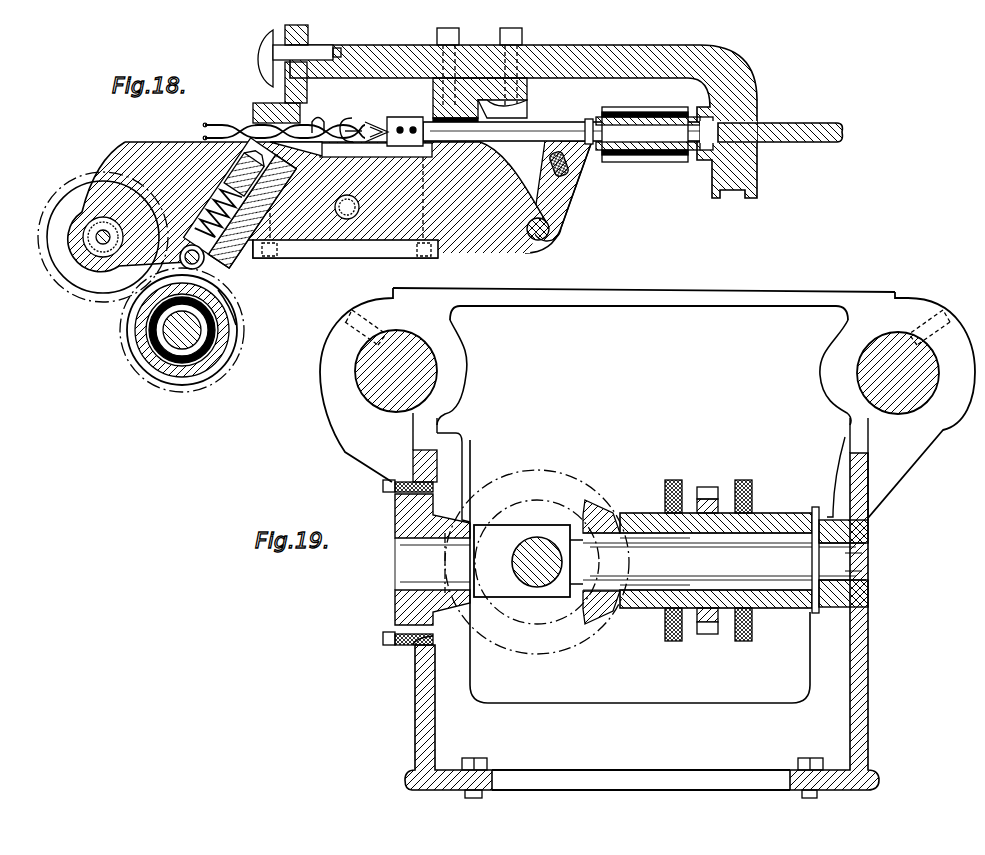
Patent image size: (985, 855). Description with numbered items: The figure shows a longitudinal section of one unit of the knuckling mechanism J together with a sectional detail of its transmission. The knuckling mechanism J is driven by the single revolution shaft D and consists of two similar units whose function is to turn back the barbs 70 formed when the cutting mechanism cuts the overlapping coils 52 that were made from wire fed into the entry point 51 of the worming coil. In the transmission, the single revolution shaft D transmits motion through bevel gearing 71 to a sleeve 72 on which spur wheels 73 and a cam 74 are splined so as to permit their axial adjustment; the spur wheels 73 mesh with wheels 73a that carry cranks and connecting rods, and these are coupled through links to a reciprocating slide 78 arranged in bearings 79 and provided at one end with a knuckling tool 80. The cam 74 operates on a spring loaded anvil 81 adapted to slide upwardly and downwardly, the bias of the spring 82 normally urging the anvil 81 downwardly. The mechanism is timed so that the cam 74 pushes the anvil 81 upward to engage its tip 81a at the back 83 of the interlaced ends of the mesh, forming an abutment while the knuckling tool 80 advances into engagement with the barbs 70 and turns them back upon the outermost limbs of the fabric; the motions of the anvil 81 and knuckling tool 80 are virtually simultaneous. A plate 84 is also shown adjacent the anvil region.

In FIG. 18, the entry point 51 is at (205, 124).
In FIG. 18, the overlapping coils 52 is at (205, 137).
In FIG. 18, the barbs 70 is at (350, 130).
In FIG. 19, the bevel gearing 71 is at (592, 610).
In FIG. 19, the sleeve 72 is at (770, 520).
In FIG. 18, the spur wheels 73 is at (147, 369).
In FIG. 19, the spur wheels 73 is at (673, 480).
In FIG. 18, the wheels 73a is at (68, 282).
In FIG. 18, the cam 74 is at (232, 312).
In FIG. 19, the cam 74 is at (707, 487).
In FIG. 18, the reciprocating slide 78 is at (793, 143).
In FIG. 18, the bearings 79 is at (646, 110).
In FIG. 18, the knuckling tool 80 is at (398, 117).
In FIG. 18, the spring loaded anvil 81 is at (218, 258).
In FIG. 18, the tip 81a is at (320, 118).
In FIG. 18, the spring 82 is at (232, 161).
In FIG. 18, the back of interlaced ends of the mesh 83 is at (350, 118).
In FIG. 18, the plate 84 is at (253, 112).
In FIG. 18, the knuckling mechanism J is at (249, 104).
In FIG. 19, the single revolution shaft D is at (525, 564).